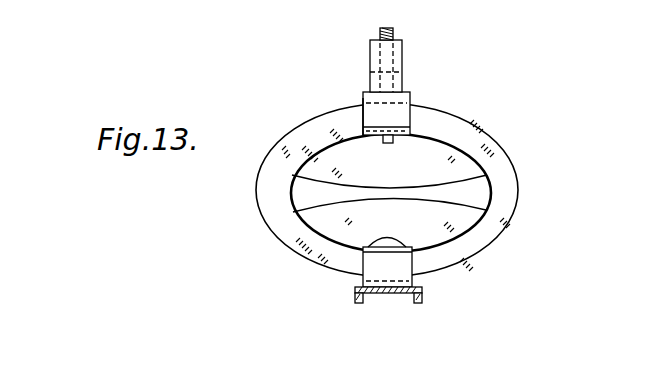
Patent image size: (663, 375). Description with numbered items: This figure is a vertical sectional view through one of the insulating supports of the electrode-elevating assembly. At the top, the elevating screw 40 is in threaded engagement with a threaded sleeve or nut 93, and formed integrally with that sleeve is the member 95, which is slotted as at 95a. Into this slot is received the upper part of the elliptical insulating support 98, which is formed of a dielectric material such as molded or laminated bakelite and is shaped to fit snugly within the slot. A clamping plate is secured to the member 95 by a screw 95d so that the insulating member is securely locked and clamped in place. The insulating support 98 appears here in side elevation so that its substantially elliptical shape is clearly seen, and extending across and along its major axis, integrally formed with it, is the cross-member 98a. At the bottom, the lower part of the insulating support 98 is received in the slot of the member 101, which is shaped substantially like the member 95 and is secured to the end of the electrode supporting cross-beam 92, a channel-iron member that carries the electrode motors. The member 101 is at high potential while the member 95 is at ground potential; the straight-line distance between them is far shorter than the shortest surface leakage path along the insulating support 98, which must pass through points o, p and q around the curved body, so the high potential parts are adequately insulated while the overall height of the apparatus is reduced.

The elevating screw 40 is at (385, 28).
The threaded sleeve or nut 93 is at (398, 57).
The slotted member 95 is at (398, 120).
The slot 95a is at (362, 125).
The screw 95d is at (376, 145).
The insulating support 98 is at (498, 158).
The cross-member 98a is at (420, 188).
The high potential member 101 is at (398, 266).
The base plate 92 is at (355, 294).